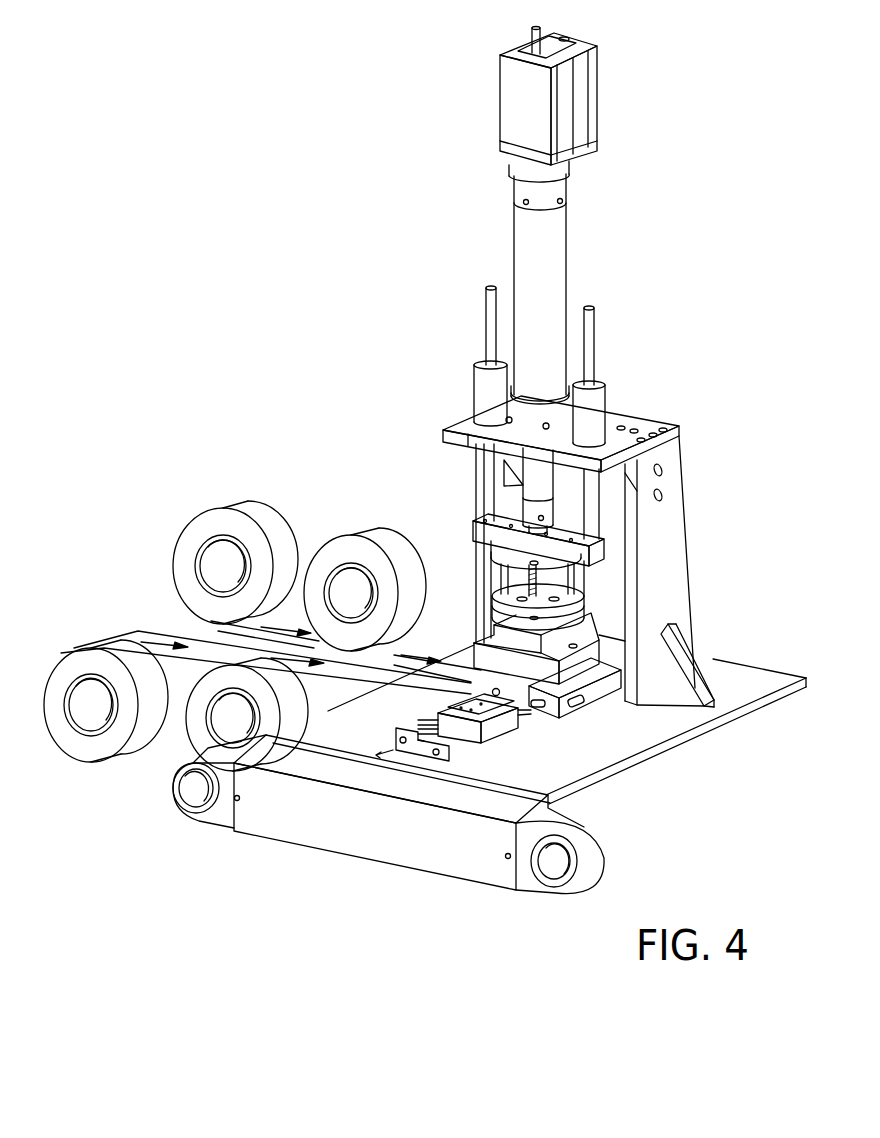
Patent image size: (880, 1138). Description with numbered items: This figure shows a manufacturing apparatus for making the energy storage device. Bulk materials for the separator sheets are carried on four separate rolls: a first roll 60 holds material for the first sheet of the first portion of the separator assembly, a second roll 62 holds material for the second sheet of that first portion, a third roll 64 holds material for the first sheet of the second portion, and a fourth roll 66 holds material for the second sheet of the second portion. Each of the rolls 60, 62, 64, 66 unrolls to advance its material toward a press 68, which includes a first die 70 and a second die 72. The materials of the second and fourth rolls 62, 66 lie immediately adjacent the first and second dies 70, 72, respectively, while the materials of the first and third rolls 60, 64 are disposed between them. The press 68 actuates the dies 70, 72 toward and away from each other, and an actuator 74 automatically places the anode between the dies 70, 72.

The first roll 60 is at (43, 707).
The second roll 62 is at (197, 742).
The third roll 64 is at (272, 511).
The fourth roll 66 is at (410, 547).
The press 68 is at (612, 423).
The first die 70 is at (563, 718).
The second die 72 is at (583, 622).
The actuator 74 is at (507, 723).